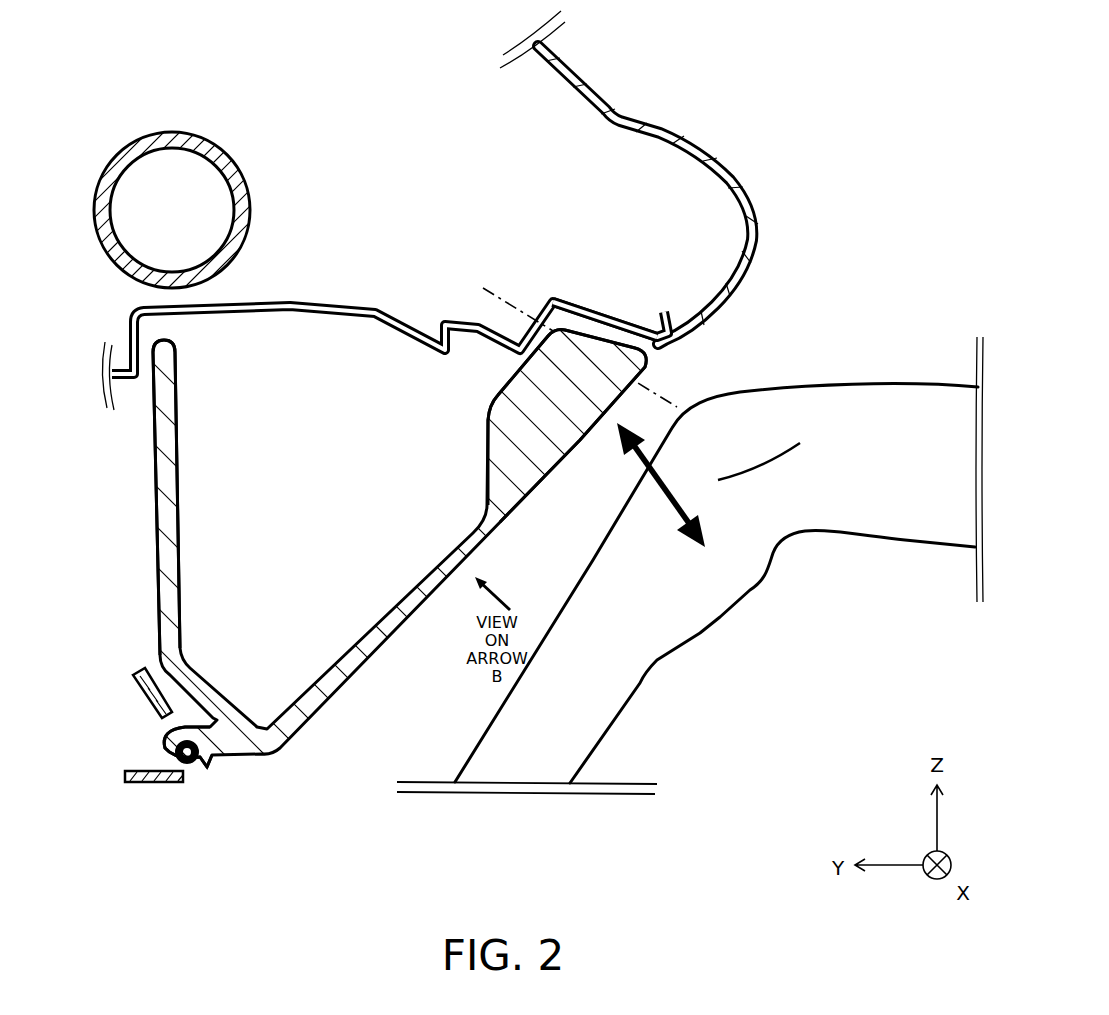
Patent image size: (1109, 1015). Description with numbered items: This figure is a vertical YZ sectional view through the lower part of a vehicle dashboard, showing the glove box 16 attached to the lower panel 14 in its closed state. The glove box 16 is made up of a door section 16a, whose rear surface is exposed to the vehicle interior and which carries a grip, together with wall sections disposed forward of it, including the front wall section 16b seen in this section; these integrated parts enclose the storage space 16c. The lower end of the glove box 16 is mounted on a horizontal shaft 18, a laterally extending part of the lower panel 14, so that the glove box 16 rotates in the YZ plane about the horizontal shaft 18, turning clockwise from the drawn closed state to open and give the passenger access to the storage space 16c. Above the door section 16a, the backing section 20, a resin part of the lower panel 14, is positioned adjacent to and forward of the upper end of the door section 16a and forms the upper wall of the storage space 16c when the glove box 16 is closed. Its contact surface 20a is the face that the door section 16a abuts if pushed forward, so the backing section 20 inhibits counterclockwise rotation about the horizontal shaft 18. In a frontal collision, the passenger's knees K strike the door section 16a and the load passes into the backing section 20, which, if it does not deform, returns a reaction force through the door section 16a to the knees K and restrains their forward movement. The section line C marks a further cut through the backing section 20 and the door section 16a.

The lower panel 14 is at (793, 249).
The glove box 16 is at (373, 709).
The door section 16a is at (447, 588).
The front wall section 16b is at (155, 479).
The storage space 16c is at (293, 503).
The horizontal shaft 18 is at (187, 765).
The backing section 20 is at (455, 322).
The contact surface 20a is at (572, 313).
The knees K is at (756, 369).
The section line C- C is at (663, 386).